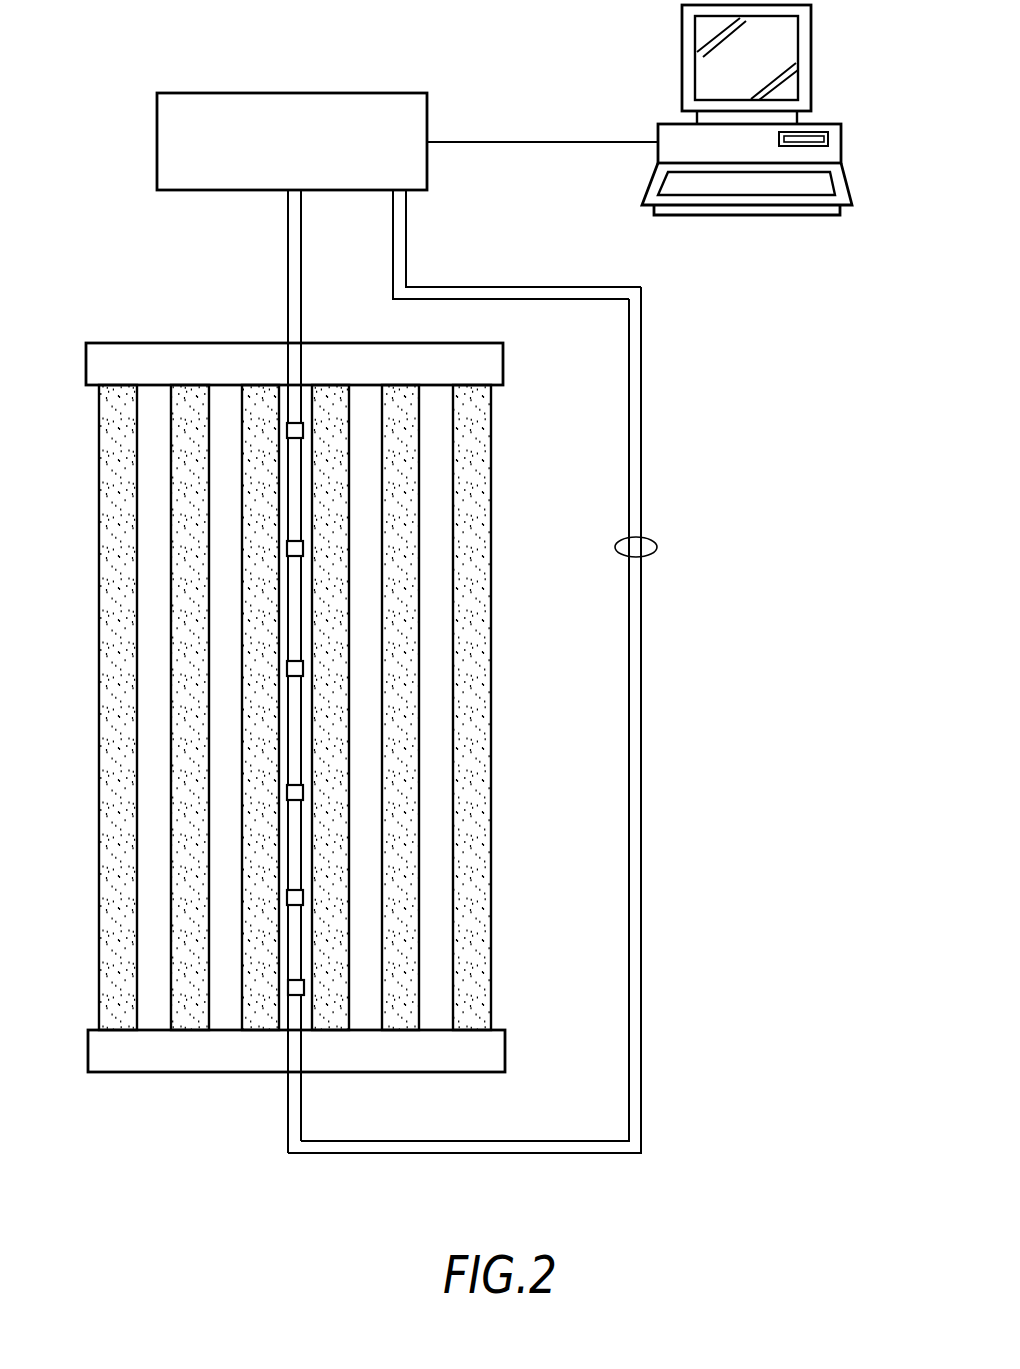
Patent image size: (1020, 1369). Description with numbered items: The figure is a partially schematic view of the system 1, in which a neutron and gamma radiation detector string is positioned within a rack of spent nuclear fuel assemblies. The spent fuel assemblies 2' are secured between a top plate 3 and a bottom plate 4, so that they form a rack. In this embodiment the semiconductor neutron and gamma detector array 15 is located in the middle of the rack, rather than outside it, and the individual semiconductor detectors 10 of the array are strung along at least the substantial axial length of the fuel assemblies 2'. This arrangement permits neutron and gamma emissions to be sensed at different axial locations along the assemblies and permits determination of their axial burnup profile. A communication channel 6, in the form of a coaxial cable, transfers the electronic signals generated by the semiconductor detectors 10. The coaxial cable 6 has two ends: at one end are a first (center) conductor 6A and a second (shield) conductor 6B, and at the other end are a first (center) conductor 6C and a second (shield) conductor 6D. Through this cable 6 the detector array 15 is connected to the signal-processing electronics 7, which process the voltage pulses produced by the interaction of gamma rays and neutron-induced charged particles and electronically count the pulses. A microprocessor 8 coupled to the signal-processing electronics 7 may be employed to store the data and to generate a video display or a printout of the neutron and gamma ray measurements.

The system 1 is at (100, 294).
The spent fuel assemblies 2' is at (295, 707).
The top plate 3 is at (503, 361).
The bottom plate 4 is at (505, 1048).
The communication channel 6 is at (657, 545).
The first (center) conductor 6A is at (302, 242).
The second (shield) conductor 6B is at (287, 268).
The first (center) conductor 6C is at (392, 283).
The second (shield) conductor 6D is at (407, 254).
The signal-processing electronics 7 is at (184, 91).
The microprocessor 8 is at (833, 122).
The semiconductor detectors 10 is at (287, 430).
The detector array 15 is at (305, 671).